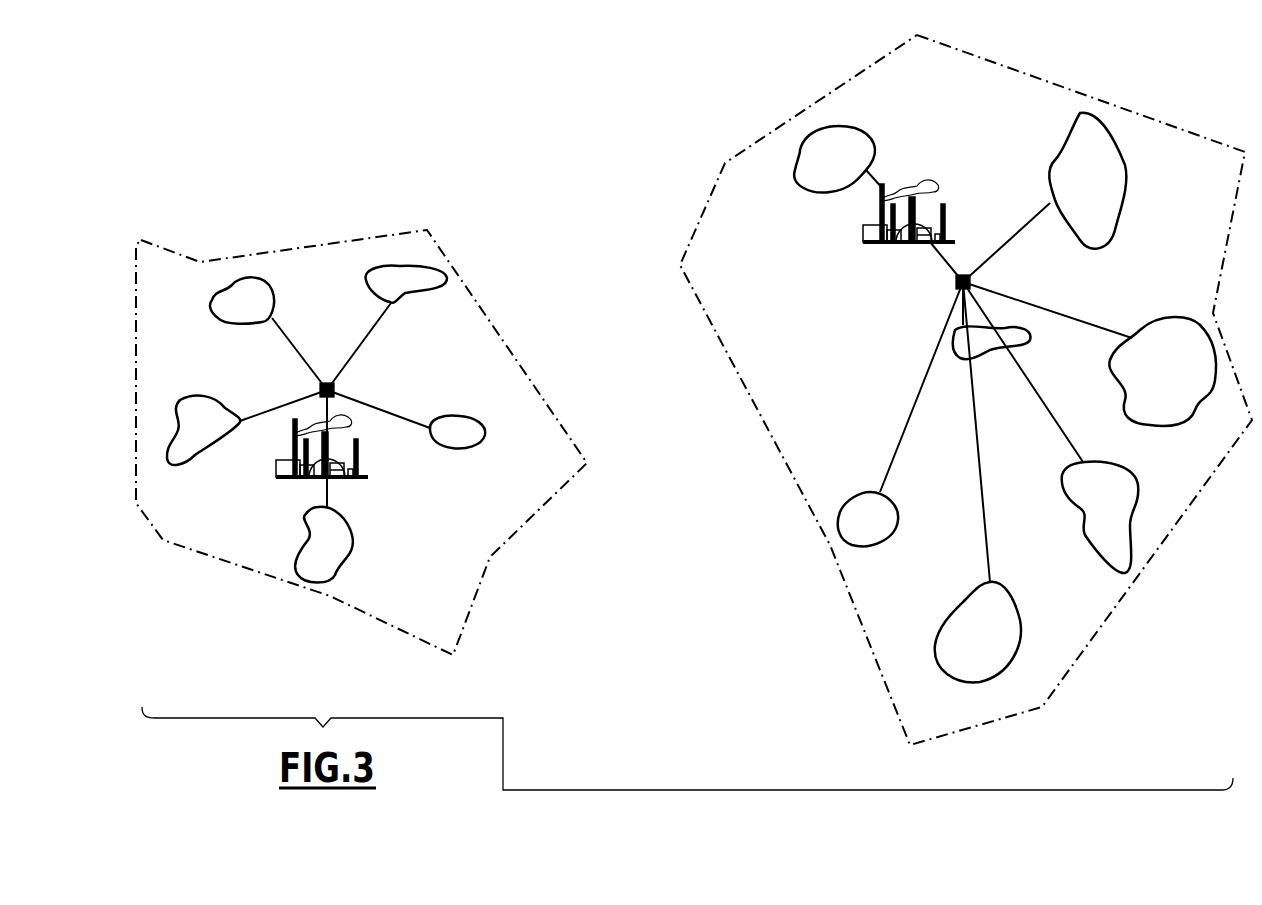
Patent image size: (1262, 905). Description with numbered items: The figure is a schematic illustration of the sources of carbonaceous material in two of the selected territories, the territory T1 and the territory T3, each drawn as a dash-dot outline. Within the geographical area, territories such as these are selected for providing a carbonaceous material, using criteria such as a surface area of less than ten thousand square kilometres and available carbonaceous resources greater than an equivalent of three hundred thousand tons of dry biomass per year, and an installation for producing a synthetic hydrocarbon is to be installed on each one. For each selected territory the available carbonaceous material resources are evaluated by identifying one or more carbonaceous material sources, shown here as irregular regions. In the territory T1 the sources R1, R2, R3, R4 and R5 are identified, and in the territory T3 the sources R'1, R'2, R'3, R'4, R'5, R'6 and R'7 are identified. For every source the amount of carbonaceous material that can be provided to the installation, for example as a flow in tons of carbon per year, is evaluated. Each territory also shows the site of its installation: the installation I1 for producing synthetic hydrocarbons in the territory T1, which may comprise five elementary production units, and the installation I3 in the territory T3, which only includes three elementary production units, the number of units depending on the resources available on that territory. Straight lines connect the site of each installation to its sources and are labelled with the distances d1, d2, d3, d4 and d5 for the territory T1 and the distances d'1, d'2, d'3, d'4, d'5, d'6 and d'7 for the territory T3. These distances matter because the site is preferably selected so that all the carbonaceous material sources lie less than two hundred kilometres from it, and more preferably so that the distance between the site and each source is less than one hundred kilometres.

The territory T1 is at (224, 562).
The installation for producing synthetic hydrocarbons I1 is at (288, 470).
The carbonaceous material source R1 is at (242, 300).
The carbonaceous material source R2 is at (406, 284).
The carbonaceous material source R3 is at (457, 432).
The carbonaceous material source R4 is at (324, 545).
The carbonaceous material source R5 is at (203, 430).
The distance between installation node and region R1 d1 is at (299, 354).
The distance between installation node and region R2 d2 is at (359, 346).
The distance between installation node and region R3 d3 is at (378, 414).
The distance between installation node and region R4 d4 is at (313, 448).
The distance between installation node and region R5 d5 is at (283, 399).
The territory T3 is at (863, 633).
The installation for producing synthetic hydrocarbons I3 is at (903, 245).
The carbonaceous material source R'1 is at (834, 159).
The carbonaceous material source R'2 is at (1087, 181).
The carbonaceous material source R'3 is at (1162, 371).
The carbonaceous material source R'4 is at (1100, 518).
The carbonaceous material source R'5 is at (978, 632).
The carbonaceous material source R'6 is at (868, 519).
The carbonaceous material source R'7 is at (992, 342).
The distance between installation I3 and region R'1 d'1 is at (887, 177).
The distance between node and region R'2 d'2 is at (1006, 242).
The distance between node and region R'3 d'3 is at (1047, 315).
The distance between node and region R'4 d'4 is at (1023, 372).
The distance between node and region R'5 d'5 is at (970, 432).
The distance between node and region R'6 d'6 is at (921, 387).
The distance between node and region R'7 d'7 is at (966, 304).